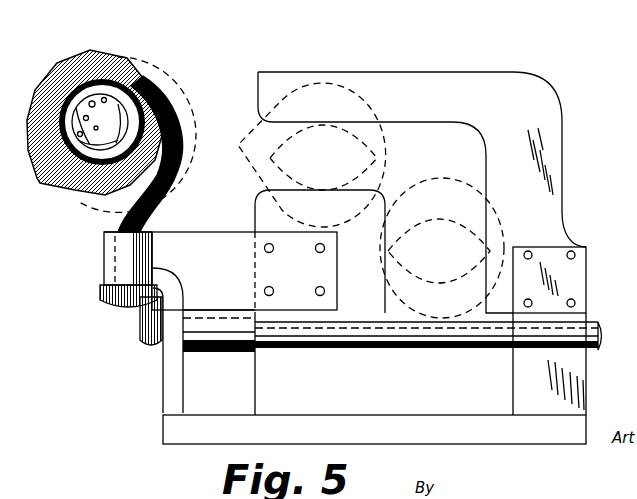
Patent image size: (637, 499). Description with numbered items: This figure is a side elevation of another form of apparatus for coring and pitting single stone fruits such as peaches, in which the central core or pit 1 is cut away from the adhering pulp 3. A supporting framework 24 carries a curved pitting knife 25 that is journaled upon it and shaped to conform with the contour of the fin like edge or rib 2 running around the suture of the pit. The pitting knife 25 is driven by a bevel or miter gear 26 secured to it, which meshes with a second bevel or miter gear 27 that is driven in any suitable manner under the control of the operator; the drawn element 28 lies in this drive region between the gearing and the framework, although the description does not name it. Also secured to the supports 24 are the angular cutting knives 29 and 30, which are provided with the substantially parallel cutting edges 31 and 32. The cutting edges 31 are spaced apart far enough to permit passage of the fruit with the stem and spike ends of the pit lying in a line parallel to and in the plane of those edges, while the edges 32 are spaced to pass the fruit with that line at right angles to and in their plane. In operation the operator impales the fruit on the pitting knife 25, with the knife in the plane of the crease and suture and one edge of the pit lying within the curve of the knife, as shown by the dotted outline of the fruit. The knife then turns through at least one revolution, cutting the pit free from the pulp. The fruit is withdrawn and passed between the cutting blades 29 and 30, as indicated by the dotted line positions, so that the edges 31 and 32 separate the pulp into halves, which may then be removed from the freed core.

The pit 1 is at (147, 78).
The fin like edge or rib 2 is at (98, 62).
The pulp 3 is at (52, 68).
The supporting framework 24 is at (538, 445).
The curved pitting knife 25 is at (104, 231).
The bevel or miter gear 26 is at (104, 310).
The bevel or miter gear 27 is at (156, 346).
The rod 28 is at (447, 344).
The angular cutting knife 29 is at (553, 117).
The angular cutting knife 30 is at (255, 222).
The cutting edges 31 is at (325, 190).
The cutting edges 32 is at (480, 258).